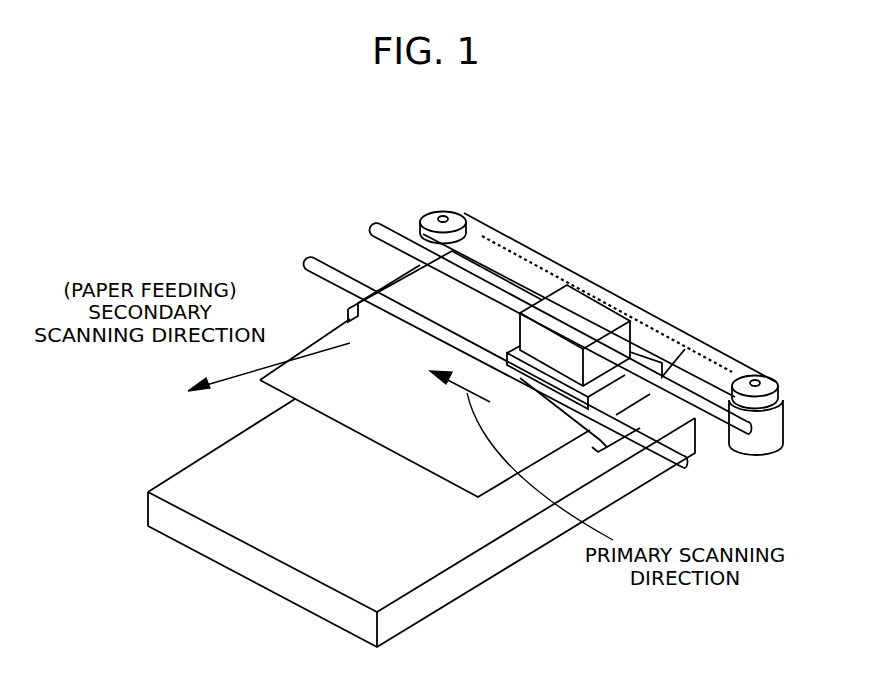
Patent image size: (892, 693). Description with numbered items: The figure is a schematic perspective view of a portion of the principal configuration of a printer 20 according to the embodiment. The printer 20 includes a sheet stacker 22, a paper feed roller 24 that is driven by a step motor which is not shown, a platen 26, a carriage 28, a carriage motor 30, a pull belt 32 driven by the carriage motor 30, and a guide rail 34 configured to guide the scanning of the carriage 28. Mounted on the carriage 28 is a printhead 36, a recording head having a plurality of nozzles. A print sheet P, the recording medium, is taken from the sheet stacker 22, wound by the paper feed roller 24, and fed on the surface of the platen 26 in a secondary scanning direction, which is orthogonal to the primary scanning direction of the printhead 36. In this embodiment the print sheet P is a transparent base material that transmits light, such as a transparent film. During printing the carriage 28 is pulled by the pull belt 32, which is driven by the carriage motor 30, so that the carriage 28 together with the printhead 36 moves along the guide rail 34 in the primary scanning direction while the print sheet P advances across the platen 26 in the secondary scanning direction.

The printer 20 is at (516, 128).
The sheet stacker 22 is at (480, 575).
The print sheet P is at (352, 333).
The paper feed roller 24 is at (715, 368).
The platen 26 is at (610, 438).
The carriage 28 is at (566, 383).
The carriage motor 30 is at (780, 428).
The pull belt 32 is at (500, 238).
The guide rail 34 is at (310, 258).
The printhead 36 is at (572, 297).